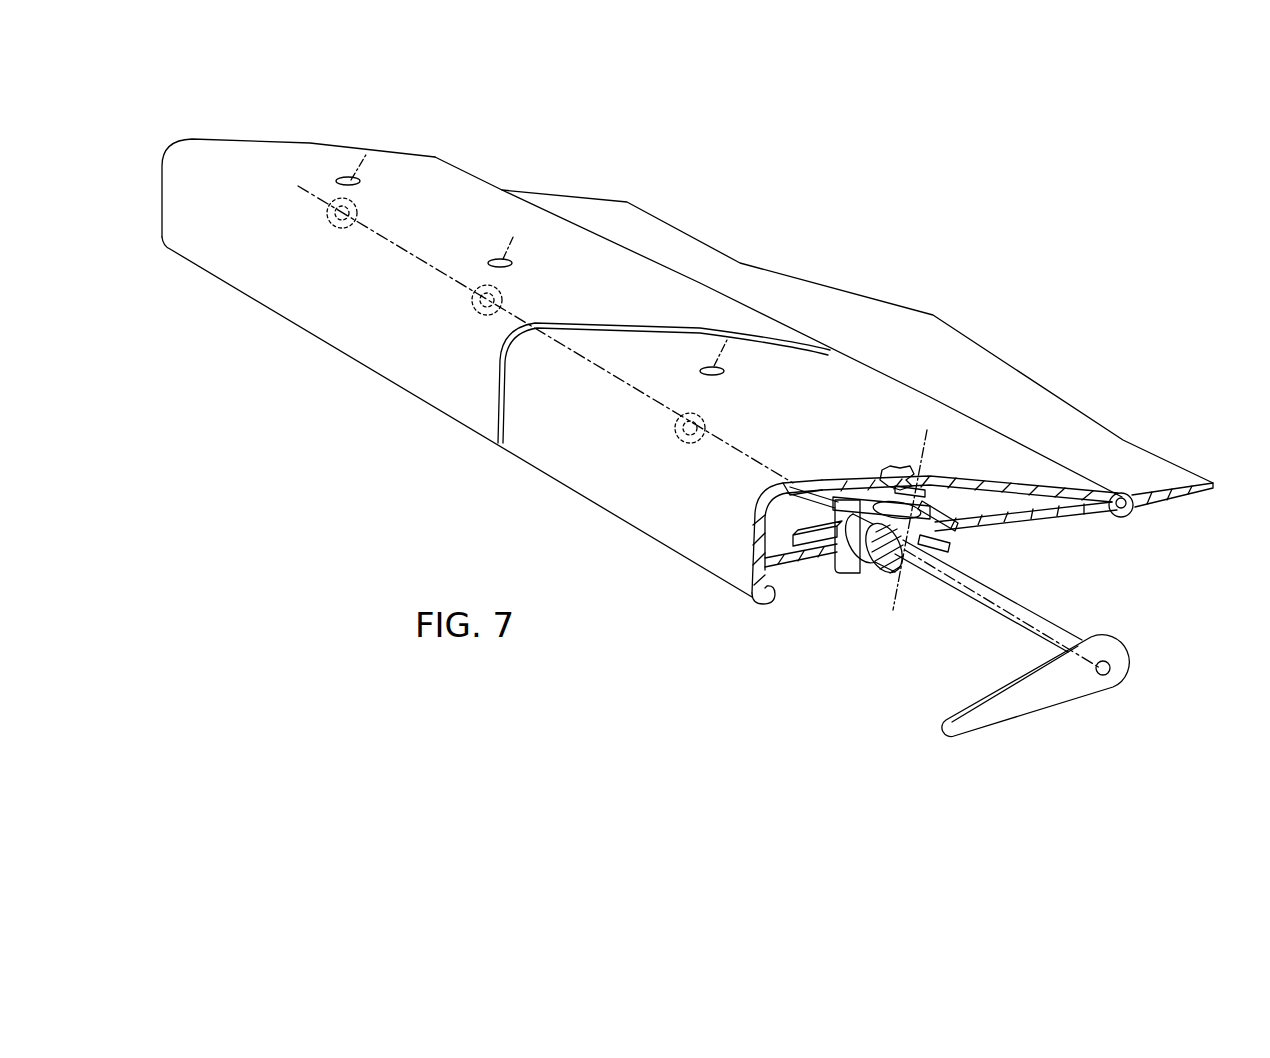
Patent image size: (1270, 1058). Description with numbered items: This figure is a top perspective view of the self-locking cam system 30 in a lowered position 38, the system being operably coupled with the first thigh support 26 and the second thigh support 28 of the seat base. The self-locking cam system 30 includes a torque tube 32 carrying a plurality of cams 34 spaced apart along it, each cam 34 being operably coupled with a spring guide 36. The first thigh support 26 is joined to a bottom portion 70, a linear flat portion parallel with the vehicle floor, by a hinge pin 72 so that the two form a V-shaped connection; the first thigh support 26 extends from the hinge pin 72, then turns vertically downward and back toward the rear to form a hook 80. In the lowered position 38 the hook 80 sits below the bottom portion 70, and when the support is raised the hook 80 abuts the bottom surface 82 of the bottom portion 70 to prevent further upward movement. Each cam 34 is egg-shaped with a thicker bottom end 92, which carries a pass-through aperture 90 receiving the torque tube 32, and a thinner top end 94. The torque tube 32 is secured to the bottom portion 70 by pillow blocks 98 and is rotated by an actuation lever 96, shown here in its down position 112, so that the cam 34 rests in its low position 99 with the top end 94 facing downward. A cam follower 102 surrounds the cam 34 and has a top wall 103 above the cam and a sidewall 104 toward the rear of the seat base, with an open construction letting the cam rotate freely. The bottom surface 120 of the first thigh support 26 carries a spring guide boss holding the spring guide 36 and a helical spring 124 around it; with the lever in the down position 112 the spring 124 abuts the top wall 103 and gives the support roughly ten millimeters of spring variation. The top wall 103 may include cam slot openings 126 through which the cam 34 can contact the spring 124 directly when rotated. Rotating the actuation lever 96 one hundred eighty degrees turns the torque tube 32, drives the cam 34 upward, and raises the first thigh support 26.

The first thigh support 26 is at (862, 384).
The second thigh support 28 is at (558, 243).
The self-locking cam system 30 is at (1165, 600).
The torque tube 32 is at (1007, 594).
The cam 34 is at (326, 227).
The spring guide 36 is at (900, 467).
The lowered position 38 is at (806, 650).
The bottom portion 70 is at (1181, 497).
The hinge pin 72 is at (1135, 516).
The hook 80 is at (768, 600).
The bottom surface 82 is at (933, 543).
The pass-through aperture 90 is at (879, 575).
The bottom end 92 is at (843, 500).
The top end 94 is at (897, 573).
The actuation lever 96 is at (1050, 710).
The pillow blocks 98 is at (973, 523).
The low position 99 is at (844, 584).
The cam follower 102 is at (940, 512).
The top wall 103 is at (867, 508).
The sidewall 104 is at (947, 517).
The down position 112 is at (933, 734).
The bottom surface 120 is at (823, 483).
The spring 124 is at (915, 490).
The cam slot openings 126 is at (348, 179).